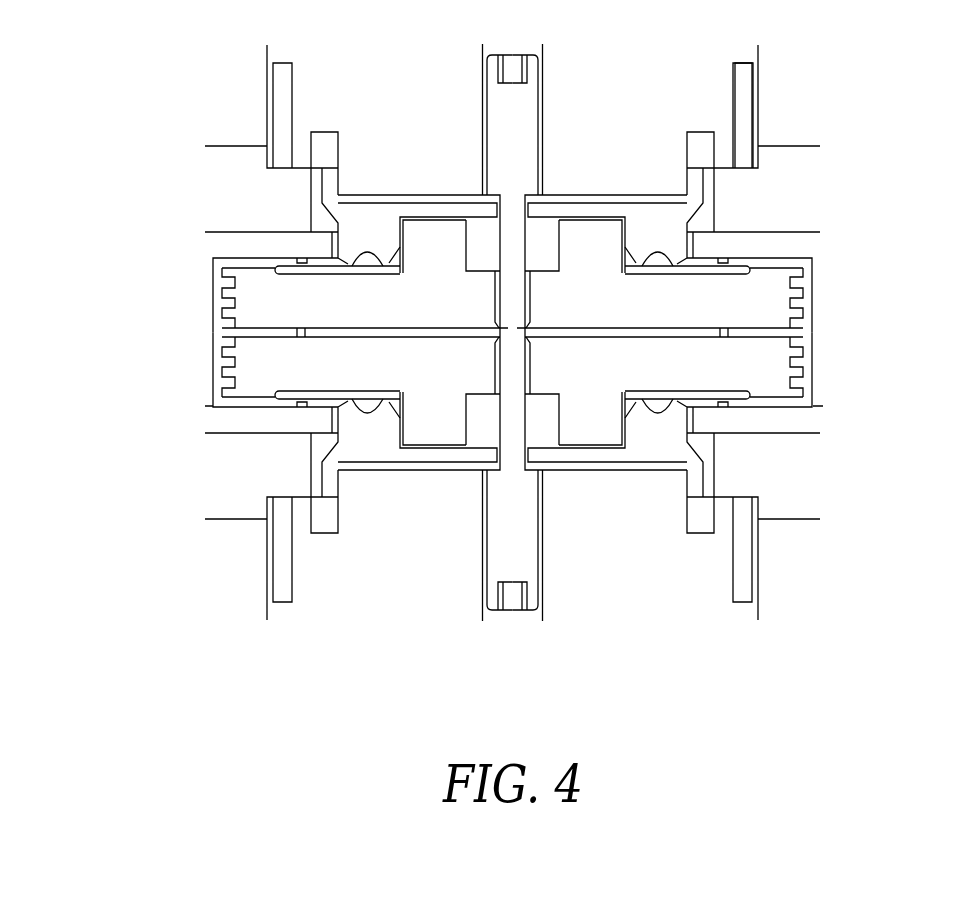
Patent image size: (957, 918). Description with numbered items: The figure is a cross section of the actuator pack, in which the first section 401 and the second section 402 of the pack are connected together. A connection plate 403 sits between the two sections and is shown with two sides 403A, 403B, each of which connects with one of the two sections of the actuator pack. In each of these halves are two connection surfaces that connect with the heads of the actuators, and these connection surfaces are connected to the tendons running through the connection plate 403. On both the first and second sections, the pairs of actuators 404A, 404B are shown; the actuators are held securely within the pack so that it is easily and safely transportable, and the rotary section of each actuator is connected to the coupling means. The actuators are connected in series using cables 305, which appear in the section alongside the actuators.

The cables 305 is at (743, 86).
The first section 401 is at (795, 120).
The second section 402 is at (776, 598).
The connection plate 403 is at (802, 332).
The first side of connection plate 403A is at (253, 312).
The second side of connection plate 403B is at (253, 362).
The first actuator of pair 404A is at (352, 186).
The second actuator of pair 404B is at (678, 187).